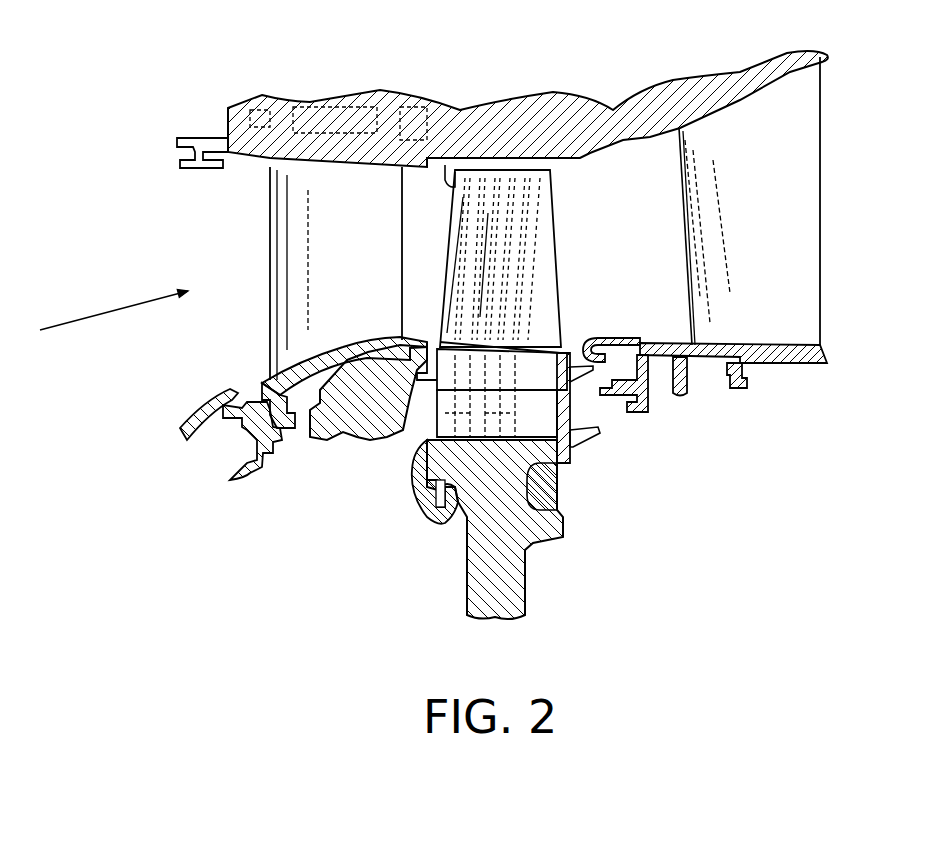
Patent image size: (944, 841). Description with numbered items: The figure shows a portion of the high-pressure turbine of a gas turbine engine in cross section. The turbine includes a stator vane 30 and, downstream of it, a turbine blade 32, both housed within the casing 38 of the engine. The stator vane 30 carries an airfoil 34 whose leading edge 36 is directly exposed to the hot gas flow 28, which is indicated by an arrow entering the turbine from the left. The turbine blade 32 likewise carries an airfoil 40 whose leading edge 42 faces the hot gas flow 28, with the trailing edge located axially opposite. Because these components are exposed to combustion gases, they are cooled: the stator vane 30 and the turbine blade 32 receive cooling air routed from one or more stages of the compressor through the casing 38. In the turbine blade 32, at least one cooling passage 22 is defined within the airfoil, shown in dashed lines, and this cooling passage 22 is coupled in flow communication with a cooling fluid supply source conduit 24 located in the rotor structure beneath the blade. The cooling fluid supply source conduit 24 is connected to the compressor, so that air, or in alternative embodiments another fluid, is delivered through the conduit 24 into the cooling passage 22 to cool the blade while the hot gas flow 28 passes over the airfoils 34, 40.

The cooling passage 22 is at (548, 200).
The cooling fluid supply source conduit 24 is at (413, 524).
The hot gas flow 28 is at (92, 314).
The stator vane 30 is at (266, 373).
The turbine blade 32 is at (567, 350).
The airfoil 34 is at (350, 222).
The leading edge 36 is at (270, 190).
The casing 38 is at (315, 92).
The airfoil 40 is at (562, 236).
The leading edge 42 is at (446, 165).